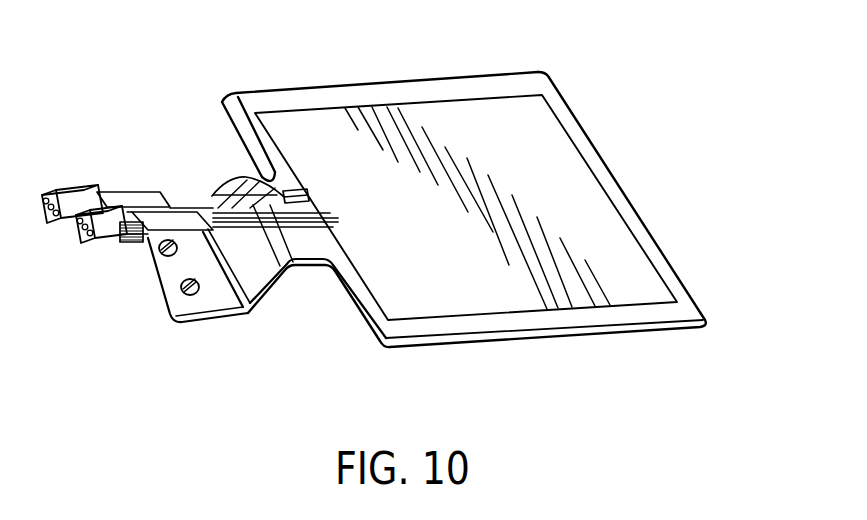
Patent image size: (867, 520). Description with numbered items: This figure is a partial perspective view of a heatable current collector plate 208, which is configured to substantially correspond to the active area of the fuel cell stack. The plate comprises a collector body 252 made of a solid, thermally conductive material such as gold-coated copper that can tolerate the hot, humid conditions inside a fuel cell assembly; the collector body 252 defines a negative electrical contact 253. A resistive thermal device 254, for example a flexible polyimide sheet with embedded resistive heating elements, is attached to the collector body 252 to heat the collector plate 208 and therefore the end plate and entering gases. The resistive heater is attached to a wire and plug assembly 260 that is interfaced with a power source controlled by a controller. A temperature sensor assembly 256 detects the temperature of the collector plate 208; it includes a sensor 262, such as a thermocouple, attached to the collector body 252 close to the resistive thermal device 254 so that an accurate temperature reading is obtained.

The heatable current collector plate 208 is at (712, 147).
The collector body 252 is at (380, 344).
The negative electrical contact 253 is at (196, 305).
The resistive thermal device 254 is at (468, 117).
The temperature sensor assembly 256 is at (74, 178).
The wire and plug assembly 260 is at (121, 253).
The sensor 262 is at (246, 178).